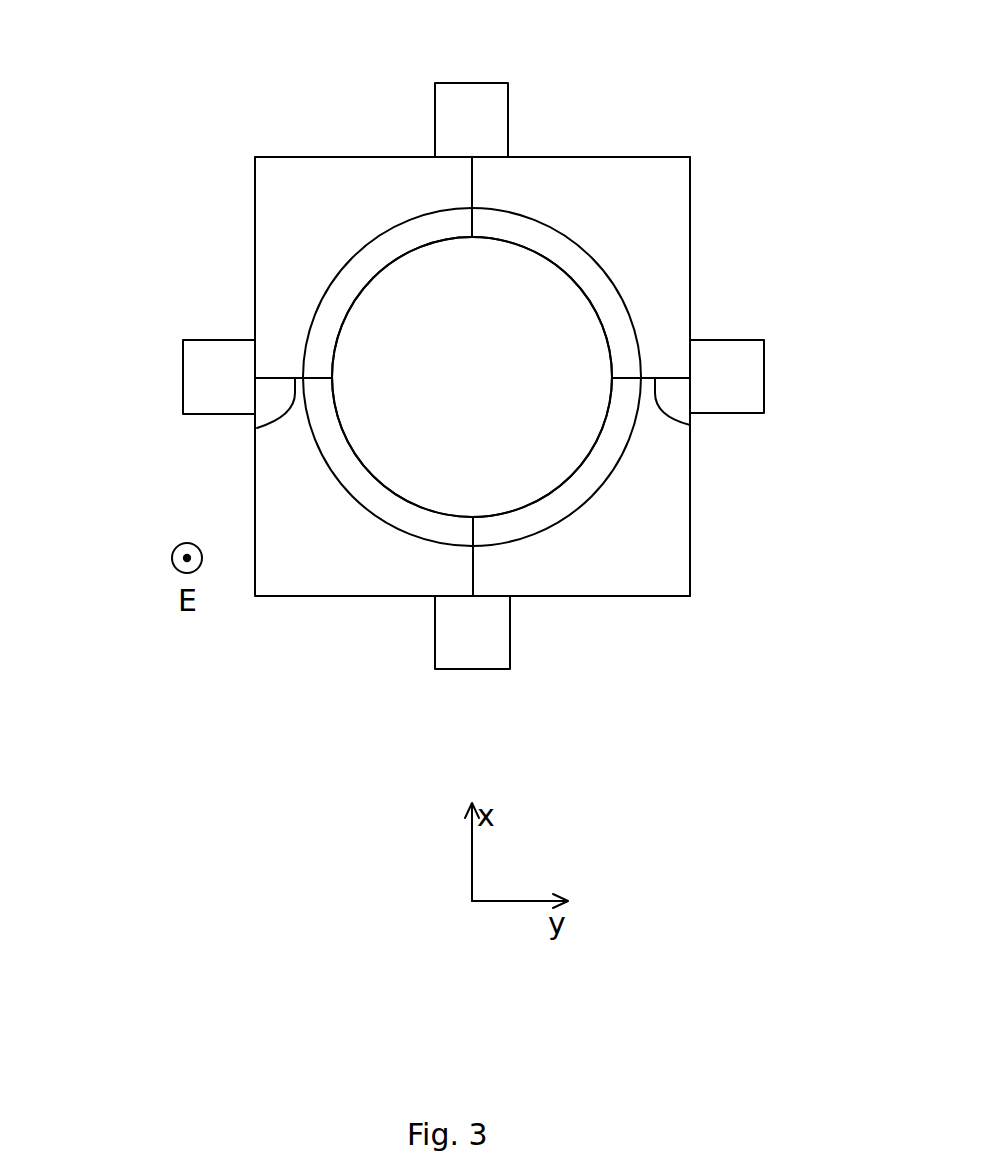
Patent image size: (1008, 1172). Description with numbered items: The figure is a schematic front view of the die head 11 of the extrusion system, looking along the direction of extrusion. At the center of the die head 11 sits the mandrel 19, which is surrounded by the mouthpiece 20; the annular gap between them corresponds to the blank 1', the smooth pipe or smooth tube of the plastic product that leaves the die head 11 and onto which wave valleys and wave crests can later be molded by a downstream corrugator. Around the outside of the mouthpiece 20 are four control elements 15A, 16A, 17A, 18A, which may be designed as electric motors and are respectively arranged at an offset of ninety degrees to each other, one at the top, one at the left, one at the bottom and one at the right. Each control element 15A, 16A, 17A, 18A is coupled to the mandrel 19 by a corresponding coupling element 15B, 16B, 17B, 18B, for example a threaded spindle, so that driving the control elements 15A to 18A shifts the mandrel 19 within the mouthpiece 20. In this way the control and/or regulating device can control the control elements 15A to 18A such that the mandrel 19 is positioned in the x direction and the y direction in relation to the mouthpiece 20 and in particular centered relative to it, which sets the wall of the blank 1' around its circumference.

The die head 11 is at (623, 148).
The mouthpiece 20 is at (675, 217).
The blank 1' is at (389, 377).
The mandrel 19 is at (553, 412).
The control element 15A is at (476, 83).
The coupling element 15B is at (471, 197).
The control element 16A is at (183, 386).
The coupling element 16B is at (257, 428).
The control element 17A is at (475, 670).
The coupling element 17B is at (473, 560).
The control element 18A is at (764, 370).
The coupling element 18B is at (690, 425).